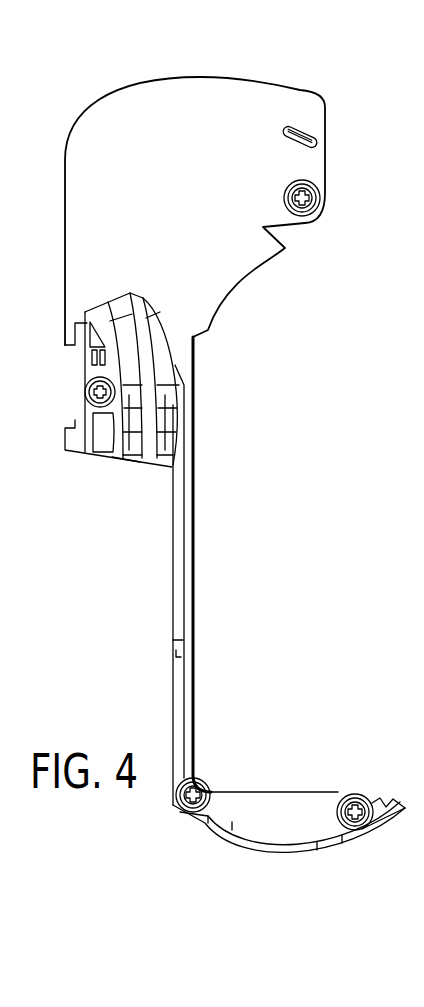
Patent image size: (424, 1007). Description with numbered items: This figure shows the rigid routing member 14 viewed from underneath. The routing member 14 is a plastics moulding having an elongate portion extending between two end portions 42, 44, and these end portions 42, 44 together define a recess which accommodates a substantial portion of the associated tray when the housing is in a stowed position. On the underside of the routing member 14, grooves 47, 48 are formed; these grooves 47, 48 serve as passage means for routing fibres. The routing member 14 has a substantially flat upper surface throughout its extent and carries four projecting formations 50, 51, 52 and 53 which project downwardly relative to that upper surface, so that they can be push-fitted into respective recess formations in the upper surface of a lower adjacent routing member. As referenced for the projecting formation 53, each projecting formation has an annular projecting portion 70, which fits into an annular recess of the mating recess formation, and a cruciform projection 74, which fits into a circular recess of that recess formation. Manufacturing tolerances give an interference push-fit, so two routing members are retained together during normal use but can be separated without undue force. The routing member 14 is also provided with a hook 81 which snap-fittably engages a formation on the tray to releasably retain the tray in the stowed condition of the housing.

The rigid routing member 14 is at (222, 476).
The end portion 42 is at (228, 853).
The end portion 44 is at (84, 110).
The groove 47 is at (158, 460).
The groove 48 is at (120, 462).
The projecting formation 50 is at (320, 230).
The projecting formation 51 is at (82, 395).
The projecting formation 52 is at (213, 779).
The projecting formation 53 is at (351, 789).
The annular projecting portion 70 is at (336, 806).
The cruciform projection 74 is at (362, 828).
The hook 81 is at (404, 803).